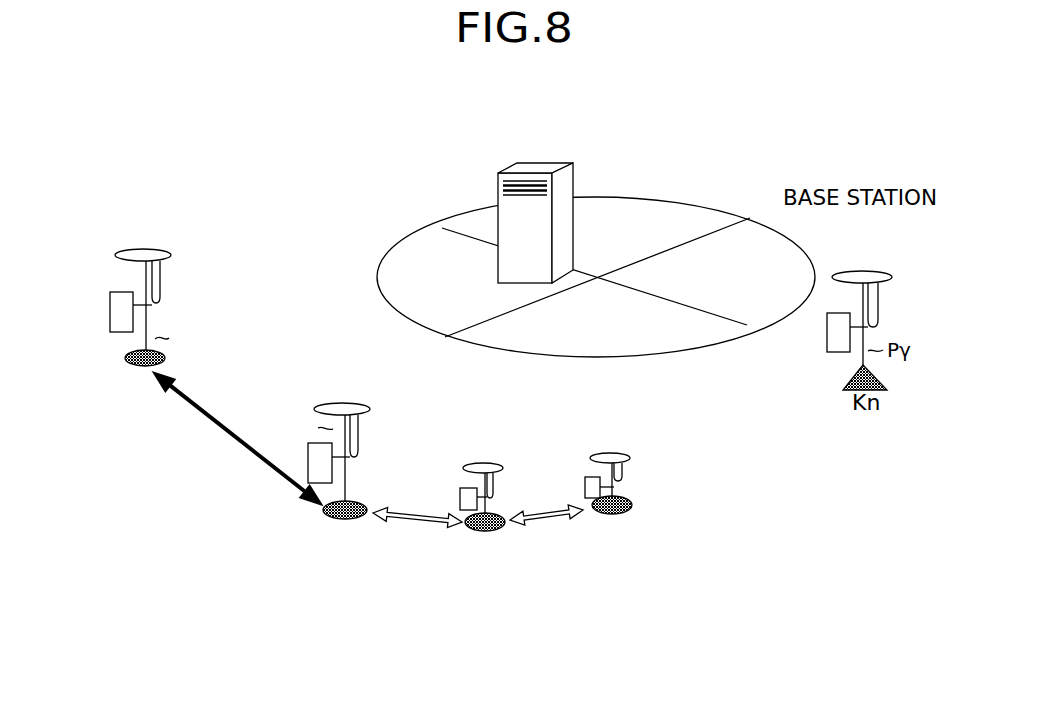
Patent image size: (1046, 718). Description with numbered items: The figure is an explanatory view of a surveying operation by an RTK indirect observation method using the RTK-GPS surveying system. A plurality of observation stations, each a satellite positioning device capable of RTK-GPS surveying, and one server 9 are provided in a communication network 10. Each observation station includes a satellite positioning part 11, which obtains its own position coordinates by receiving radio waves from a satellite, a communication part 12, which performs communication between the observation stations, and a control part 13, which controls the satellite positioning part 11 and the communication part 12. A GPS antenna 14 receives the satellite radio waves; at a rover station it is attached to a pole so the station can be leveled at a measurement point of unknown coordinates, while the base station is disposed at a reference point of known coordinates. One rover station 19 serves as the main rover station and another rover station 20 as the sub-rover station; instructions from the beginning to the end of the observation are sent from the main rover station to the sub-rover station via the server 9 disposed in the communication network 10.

The server 9 is at (536, 168).
The communication network 10 is at (670, 229).
The satellite positioning part 11 is at (489, 493).
The communication part 12 is at (489, 493).
The control part 13 is at (123, 317).
The GPS antenna 14 is at (170, 251).
The rover station 19 is at (168, 279).
The rover station 20 is at (370, 454).